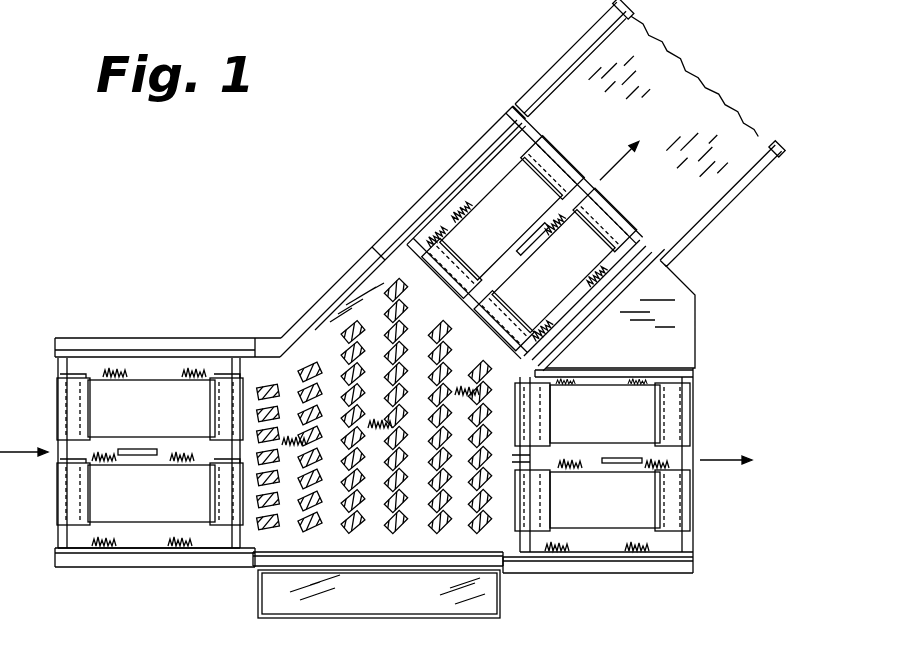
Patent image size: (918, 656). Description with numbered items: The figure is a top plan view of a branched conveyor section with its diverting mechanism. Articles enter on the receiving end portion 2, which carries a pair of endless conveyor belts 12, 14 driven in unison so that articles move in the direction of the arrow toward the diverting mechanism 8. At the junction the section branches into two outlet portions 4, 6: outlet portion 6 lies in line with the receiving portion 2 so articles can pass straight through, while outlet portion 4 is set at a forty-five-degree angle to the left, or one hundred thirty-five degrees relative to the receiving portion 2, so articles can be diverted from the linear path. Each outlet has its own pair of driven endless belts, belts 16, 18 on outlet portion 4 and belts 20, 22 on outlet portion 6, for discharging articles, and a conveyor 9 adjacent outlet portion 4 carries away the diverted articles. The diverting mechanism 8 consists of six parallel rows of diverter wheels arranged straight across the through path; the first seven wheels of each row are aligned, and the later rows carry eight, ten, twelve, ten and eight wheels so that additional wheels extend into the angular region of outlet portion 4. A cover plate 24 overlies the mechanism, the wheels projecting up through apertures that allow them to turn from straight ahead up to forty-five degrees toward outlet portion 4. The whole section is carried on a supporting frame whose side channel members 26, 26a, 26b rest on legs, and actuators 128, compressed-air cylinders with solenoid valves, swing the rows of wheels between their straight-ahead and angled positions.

The receiving end portion 2 is at (140, 334).
The outlet portion 4 is at (420, 158).
The outlet portion 6 is at (608, 608).
The diverting mechanism 8 is at (303, 281).
The conveyor 9 is at (690, 78).
The endless conveyor belt 12 is at (150, 407).
The endless conveyor belt 14 is at (150, 492).
The endless belt 16 is at (503, 217).
The endless belt 18 is at (555, 269).
The endless belt 20 is at (602, 414).
The endless belt 22 is at (602, 500).
The cover plate 24 is at (372, 249).
The side channel member 26 is at (308, 320).
The side channel member 26a is at (128, 562).
The side channel member 26b is at (598, 322).
The actuator 128 is at (270, 596).